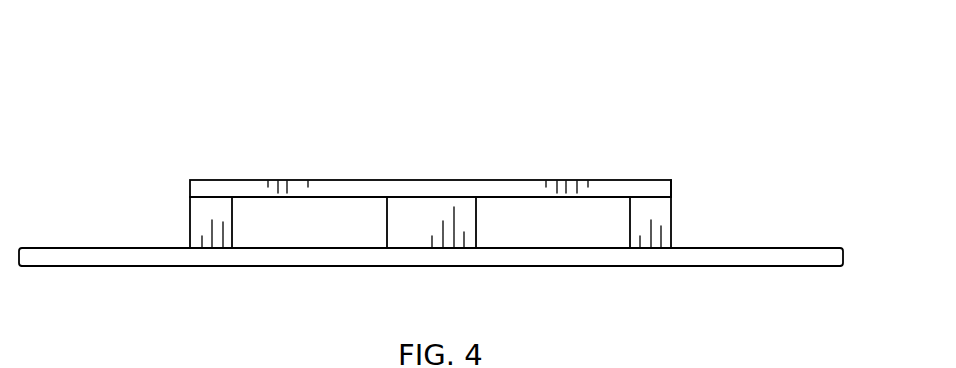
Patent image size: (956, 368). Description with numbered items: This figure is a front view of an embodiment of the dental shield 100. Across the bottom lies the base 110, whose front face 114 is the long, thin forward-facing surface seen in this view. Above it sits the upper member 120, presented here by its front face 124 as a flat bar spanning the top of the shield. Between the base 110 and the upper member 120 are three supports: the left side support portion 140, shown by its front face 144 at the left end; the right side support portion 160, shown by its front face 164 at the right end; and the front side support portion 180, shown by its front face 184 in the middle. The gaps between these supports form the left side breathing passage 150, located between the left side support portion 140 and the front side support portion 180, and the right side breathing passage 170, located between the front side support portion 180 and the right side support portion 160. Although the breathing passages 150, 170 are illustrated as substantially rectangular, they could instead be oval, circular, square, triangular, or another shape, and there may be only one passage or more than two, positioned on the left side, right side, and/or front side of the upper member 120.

The dental shield 100 is at (446, 177).
The base 110 is at (446, 252).
The front face of base 114 is at (778, 258).
The upper member 120 is at (479, 130).
The front face of upper member 124 is at (673, 185).
The left side support portion 140 is at (159, 193).
The front face of left side support portion 144 is at (208, 228).
The left side breathing passage 150 is at (294, 192).
The right side support portion 160 is at (706, 212).
The front face of right side support portion 164 is at (663, 228).
The right side breathing passage 170 is at (567, 197).
The front side support portion 180 is at (445, 178).
The front face of front side support portion 184 is at (432, 228).